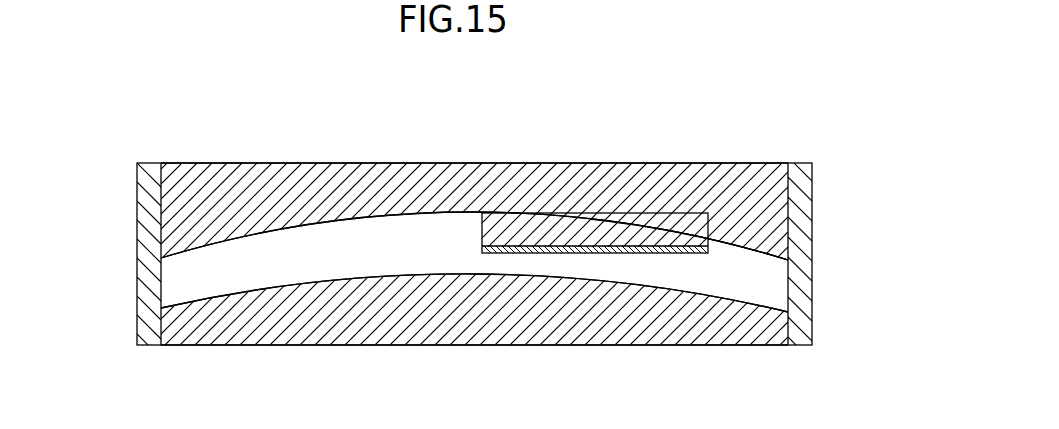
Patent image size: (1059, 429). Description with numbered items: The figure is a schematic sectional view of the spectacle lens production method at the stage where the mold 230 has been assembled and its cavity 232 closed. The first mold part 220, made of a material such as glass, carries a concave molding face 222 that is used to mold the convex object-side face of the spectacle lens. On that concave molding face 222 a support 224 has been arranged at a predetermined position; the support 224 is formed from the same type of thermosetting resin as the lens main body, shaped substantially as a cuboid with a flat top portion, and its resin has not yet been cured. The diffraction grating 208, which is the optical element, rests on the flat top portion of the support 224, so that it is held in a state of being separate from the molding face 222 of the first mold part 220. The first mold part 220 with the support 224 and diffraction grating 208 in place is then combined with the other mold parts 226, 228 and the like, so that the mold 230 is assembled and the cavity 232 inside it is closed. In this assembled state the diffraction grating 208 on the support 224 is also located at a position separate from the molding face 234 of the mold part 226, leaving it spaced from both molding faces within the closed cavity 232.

The mold 230 is at (593, 137).
The first mold part 220 is at (765, 180).
The concave molding face 222 is at (458, 216).
The support 224 is at (597, 220).
The diffraction grating 208 is at (667, 246).
The mold part 226 is at (673, 347).
The mold part 228 is at (137, 293).
The cavity 232 is at (345, 238).
The molding face 234 is at (472, 266).